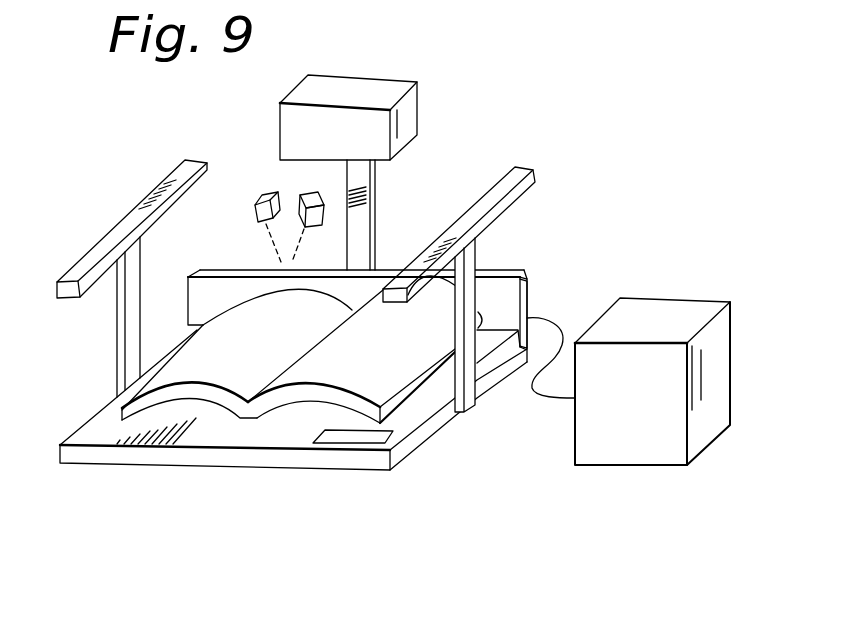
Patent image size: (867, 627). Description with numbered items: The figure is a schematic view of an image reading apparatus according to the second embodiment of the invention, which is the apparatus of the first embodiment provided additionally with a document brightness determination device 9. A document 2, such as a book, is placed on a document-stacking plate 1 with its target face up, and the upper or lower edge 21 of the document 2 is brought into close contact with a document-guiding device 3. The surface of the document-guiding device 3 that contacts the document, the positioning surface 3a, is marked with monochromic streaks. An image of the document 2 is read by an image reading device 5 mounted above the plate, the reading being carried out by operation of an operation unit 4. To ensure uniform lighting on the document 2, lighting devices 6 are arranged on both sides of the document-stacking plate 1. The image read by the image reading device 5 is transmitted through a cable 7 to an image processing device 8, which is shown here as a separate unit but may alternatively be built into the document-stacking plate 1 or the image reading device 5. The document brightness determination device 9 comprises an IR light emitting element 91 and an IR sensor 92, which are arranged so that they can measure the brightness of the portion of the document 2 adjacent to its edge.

The document-stacking plate 1 is at (100, 427).
The document 2 is at (205, 346).
The upper or lower edge of the document 21 is at (384, 288).
The document-guiding device 3 is at (503, 272).
The positioning surface 3a is at (510, 300).
The operation unit 4 is at (358, 453).
The image reading device 5 is at (420, 112).
The lighting device 6 is at (128, 220).
The cable 7 is at (543, 313).
The image processing device 8 is at (590, 435).
The document brightness determination device 9 is at (320, 177).
The IR light emitting element 91 is at (255, 215).
The IR sensor 92 is at (320, 208).